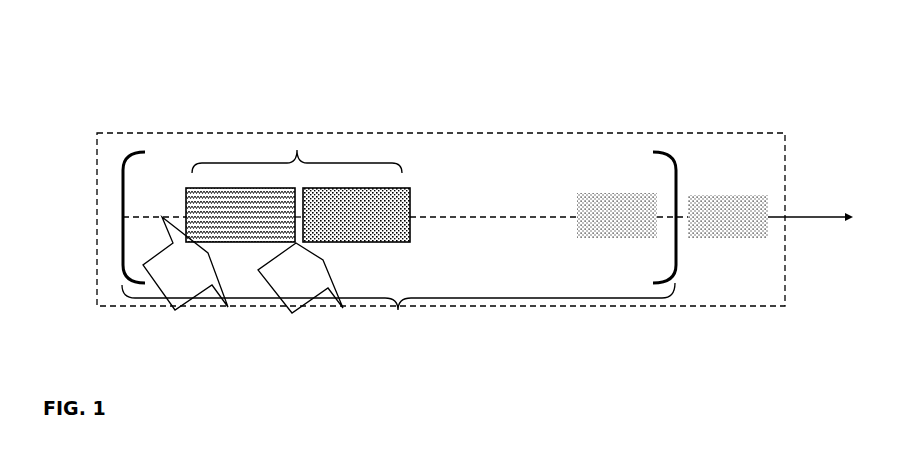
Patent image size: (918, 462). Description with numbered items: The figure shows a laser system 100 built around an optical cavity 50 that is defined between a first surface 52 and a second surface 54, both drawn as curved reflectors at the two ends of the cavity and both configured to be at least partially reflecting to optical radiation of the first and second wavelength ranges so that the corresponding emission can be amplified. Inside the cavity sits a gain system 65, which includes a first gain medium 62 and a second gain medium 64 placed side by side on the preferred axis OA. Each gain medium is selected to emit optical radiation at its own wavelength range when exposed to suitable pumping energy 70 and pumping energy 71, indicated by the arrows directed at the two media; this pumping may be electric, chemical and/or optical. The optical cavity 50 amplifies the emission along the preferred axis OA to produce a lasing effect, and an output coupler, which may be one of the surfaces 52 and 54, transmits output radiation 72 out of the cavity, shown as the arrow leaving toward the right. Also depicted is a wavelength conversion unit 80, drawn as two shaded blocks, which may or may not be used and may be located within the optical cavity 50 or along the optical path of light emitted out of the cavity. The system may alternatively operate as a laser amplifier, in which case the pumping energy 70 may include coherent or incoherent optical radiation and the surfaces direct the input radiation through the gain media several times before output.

The laser system 100 is at (581, 120).
The optical cavity 50 is at (398, 312).
The first surface 52 is at (677, 170).
The second surface 54 is at (124, 163).
The first gain medium 62 is at (335, 200).
The second gain medium 64 is at (218, 200).
The gain system 65 is at (298, 184).
The pumping energy 70 is at (185, 263).
The pumping energy 71 is at (300, 278).
The output radiation 72 is at (810, 232).
The wavelength conversion unit 80 is at (693, 232).
The preferred axis OA is at (523, 217).